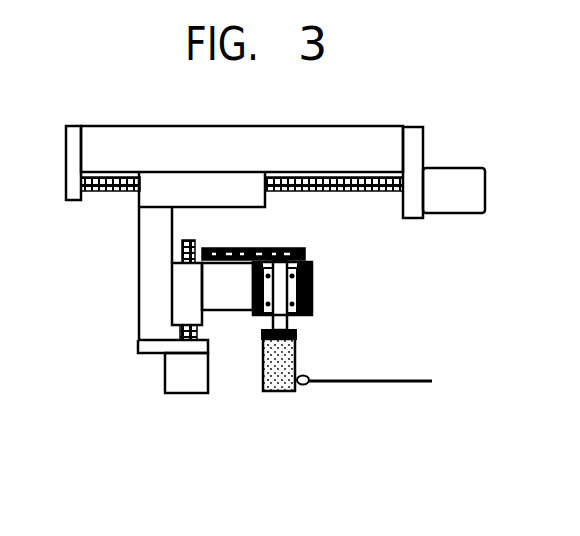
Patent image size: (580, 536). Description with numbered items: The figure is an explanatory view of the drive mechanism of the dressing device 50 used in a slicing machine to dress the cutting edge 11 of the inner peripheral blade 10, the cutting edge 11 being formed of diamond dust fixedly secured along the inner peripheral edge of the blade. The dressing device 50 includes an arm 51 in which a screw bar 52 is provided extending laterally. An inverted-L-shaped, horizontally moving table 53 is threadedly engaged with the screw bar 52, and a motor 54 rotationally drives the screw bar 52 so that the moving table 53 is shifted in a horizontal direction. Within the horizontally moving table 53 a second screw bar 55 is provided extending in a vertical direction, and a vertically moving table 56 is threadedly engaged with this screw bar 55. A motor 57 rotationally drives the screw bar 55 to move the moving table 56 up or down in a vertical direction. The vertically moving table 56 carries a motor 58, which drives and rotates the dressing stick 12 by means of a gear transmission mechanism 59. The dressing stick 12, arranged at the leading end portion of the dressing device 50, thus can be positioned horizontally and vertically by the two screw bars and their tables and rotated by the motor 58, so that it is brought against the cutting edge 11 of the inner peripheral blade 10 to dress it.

The inner peripheral blade 10 is at (405, 380).
The cutting edge 11 is at (310, 376).
The dressing stick 12 is at (283, 393).
The dressing device 50 is at (432, 128).
The arm 51 is at (372, 145).
The screw bar 52 is at (388, 196).
The horizontally moving table 53 is at (147, 239).
The motor 54 is at (468, 190).
The screw bar 55 is at (196, 246).
The vertically moving table 56 is at (180, 307).
The motor 57 is at (187, 392).
The motor 58 is at (232, 305).
The gear transmission mechanism 59 is at (305, 246).